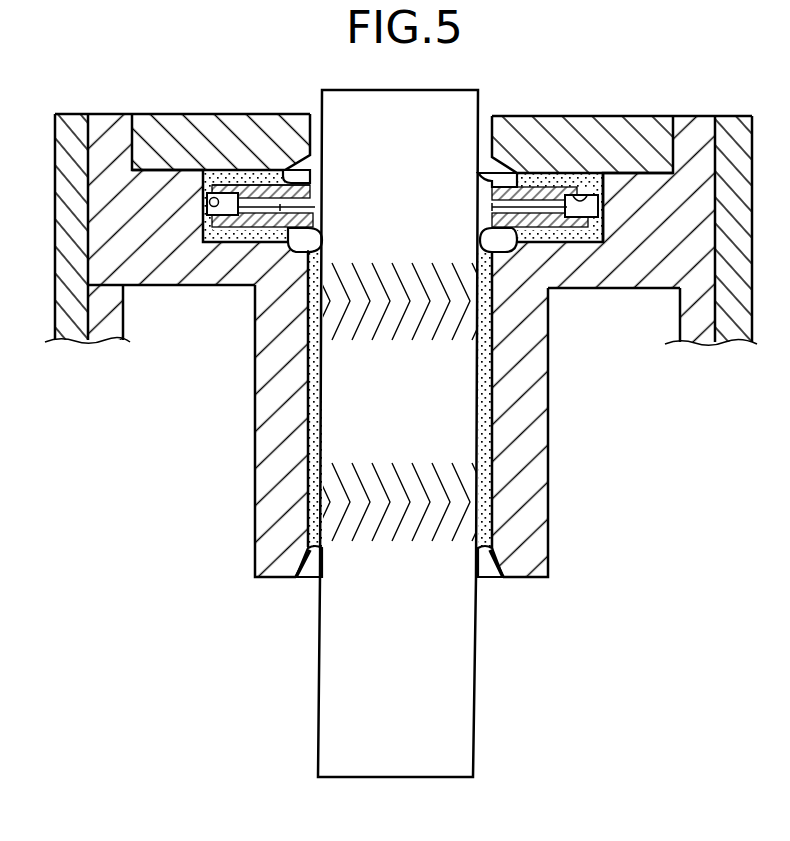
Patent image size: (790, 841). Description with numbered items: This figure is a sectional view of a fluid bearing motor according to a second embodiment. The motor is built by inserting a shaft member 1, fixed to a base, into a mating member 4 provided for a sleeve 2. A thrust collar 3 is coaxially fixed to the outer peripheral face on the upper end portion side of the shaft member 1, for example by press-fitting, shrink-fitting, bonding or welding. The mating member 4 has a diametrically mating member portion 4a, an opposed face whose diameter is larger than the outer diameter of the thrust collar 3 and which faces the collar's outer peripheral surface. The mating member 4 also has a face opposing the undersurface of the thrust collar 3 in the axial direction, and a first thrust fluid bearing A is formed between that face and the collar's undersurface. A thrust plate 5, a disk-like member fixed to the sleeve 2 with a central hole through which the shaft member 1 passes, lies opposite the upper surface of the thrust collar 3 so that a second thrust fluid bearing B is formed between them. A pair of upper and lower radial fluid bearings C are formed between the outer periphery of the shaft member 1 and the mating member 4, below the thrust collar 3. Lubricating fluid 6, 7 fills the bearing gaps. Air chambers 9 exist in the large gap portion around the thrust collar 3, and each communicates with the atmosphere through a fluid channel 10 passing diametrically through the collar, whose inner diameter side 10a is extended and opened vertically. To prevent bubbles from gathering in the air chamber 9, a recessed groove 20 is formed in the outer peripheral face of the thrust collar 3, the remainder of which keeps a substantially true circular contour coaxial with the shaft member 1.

The shaft member 1 is at (452, 715).
The sleeve 2 is at (627, 283).
The thrust collar 3 is at (275, 188).
The mating member 4 is at (484, 409).
The diametrically mating member portion 4a is at (590, 177).
The thrust plate 5 is at (516, 125).
The lubricating fluid 6 is at (488, 551).
The lubricating fluid 7 is at (235, 190).
The air chamber 9 is at (205, 207).
The fluid channel 10 is at (257, 245).
The inner diameter side of fluid channel 10a is at (487, 207).
The recessed groove 20 is at (212, 183).
The first thrust fluid bearing A is at (561, 257).
The second thrust fluid bearing B is at (541, 166).
The radial fluid bearings C is at (298, 486).